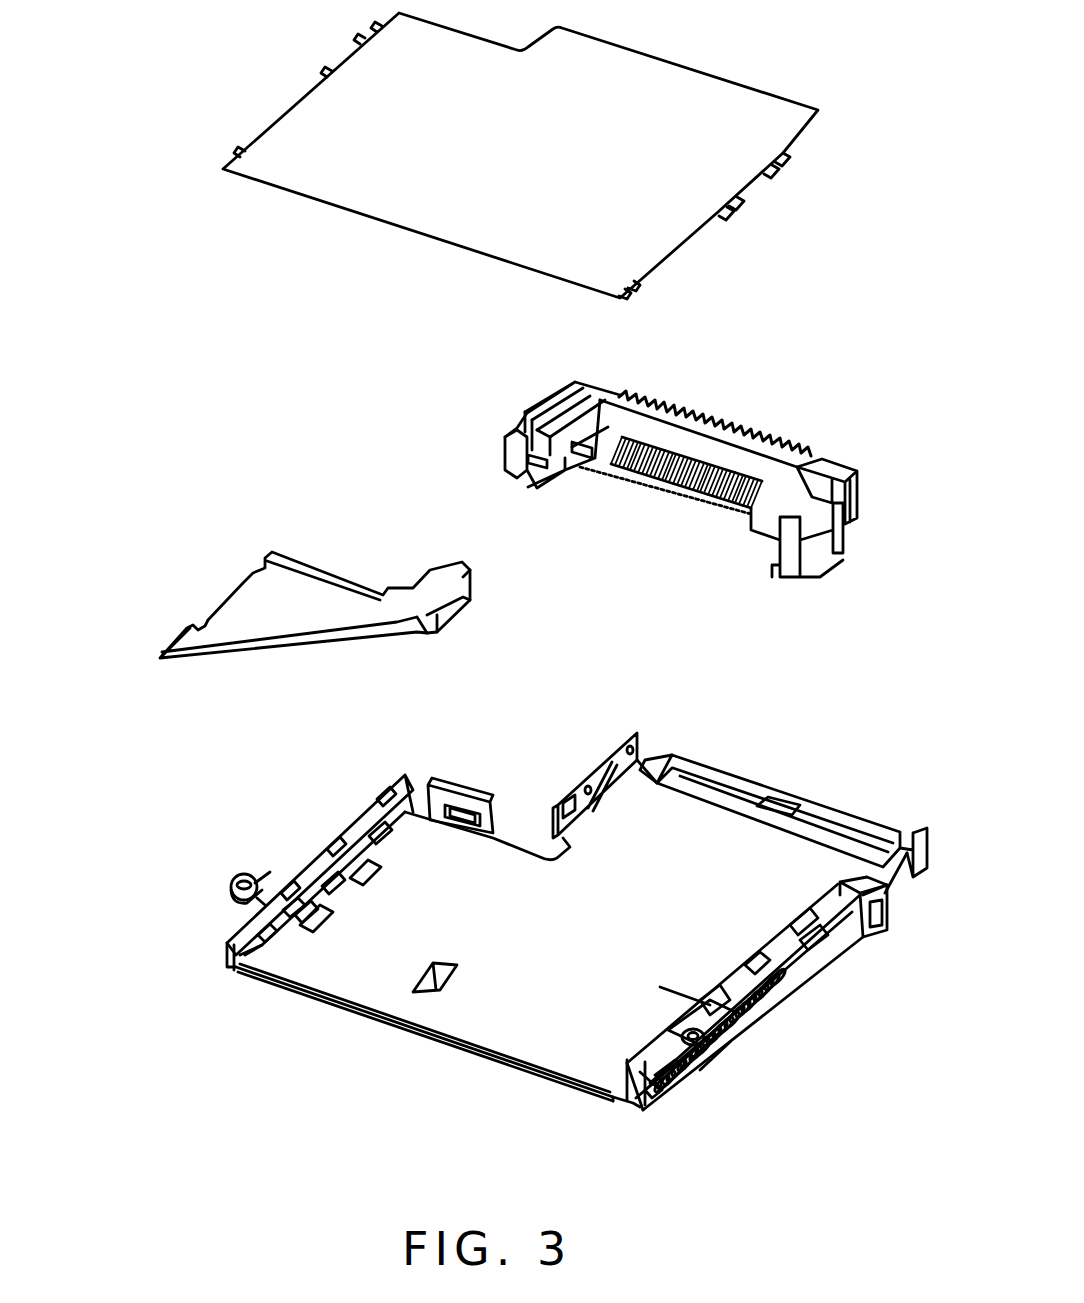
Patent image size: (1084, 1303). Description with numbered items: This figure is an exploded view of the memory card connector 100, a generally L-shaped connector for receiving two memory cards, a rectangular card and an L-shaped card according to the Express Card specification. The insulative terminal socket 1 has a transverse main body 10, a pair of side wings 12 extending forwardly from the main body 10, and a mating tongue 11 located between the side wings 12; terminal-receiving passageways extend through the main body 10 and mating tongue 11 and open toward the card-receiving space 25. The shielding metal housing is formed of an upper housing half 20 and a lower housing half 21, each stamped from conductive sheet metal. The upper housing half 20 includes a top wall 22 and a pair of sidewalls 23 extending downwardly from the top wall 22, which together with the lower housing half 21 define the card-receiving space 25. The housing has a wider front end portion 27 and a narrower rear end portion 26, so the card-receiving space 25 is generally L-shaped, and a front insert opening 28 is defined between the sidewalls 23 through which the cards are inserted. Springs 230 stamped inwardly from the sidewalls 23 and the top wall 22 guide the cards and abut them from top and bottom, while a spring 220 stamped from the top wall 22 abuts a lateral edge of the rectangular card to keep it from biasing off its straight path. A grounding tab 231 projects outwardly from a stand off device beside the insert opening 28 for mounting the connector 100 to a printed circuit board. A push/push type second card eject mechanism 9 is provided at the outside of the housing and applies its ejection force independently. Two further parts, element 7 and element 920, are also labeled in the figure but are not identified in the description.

The memory card connector 100 is at (150, 123).
The lower housing half 21 is at (673, 97).
The main body 10 is at (654, 468).
The terminal socket 1 is at (803, 467).
The mating tongue 11 is at (653, 487).
The side wings 12 is at (550, 405).
The guide plate 7 is at (320, 590).
The top wall 22 is at (567, 991).
The front end portion 27 is at (575, 1050).
The front insert opening 28 is at (282, 998).
The spring 220 is at (413, 990).
The sidewalls 23 is at (515, 935).
The springs 230 is at (333, 865).
The grounding tab 231 is at (245, 880).
The rear bracket 920 is at (648, 770).
The card-receiving space 25 is at (783, 802).
The rear end portion 26 is at (802, 870).
The upper housing half 20 is at (757, 1025).
The second card eject mechanism 9 is at (730, 1047).